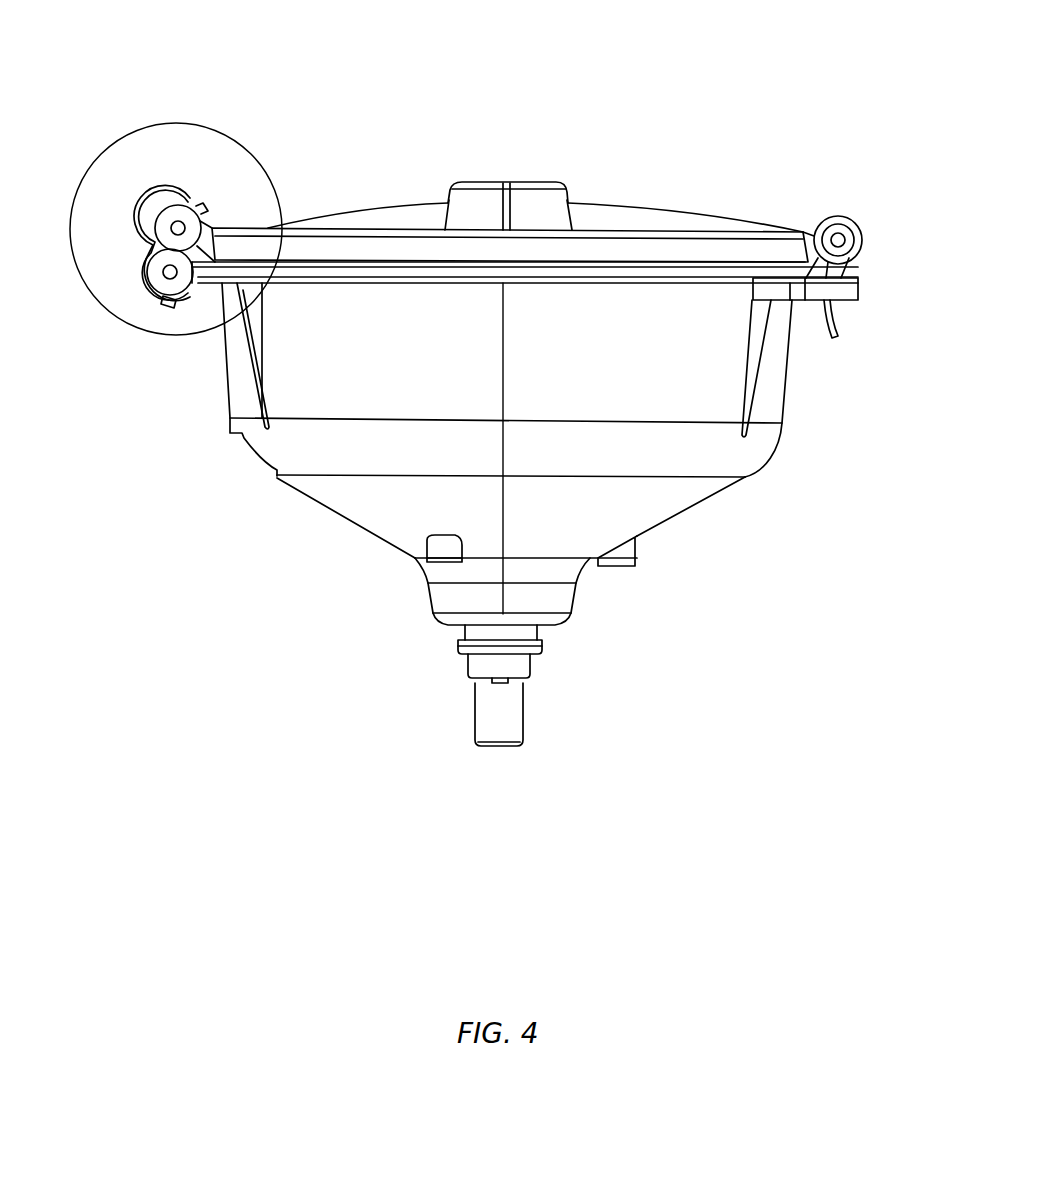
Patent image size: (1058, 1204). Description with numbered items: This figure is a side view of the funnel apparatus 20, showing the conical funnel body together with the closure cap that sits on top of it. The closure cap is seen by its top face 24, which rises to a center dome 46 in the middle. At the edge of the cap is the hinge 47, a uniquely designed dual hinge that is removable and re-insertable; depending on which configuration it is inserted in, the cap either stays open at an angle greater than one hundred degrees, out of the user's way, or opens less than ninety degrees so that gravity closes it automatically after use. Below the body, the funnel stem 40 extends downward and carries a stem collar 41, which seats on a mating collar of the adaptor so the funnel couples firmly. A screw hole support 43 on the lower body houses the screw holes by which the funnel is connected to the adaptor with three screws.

The funnel apparatus 20 is at (785, 407).
The cap top face 24 is at (673, 213).
The funnel stem 40 is at (515, 735).
The stem collar 41 is at (523, 670).
The screw hole support 43 is at (618, 566).
The center dome 46 is at (540, 183).
The hinge 47 is at (157, 195).